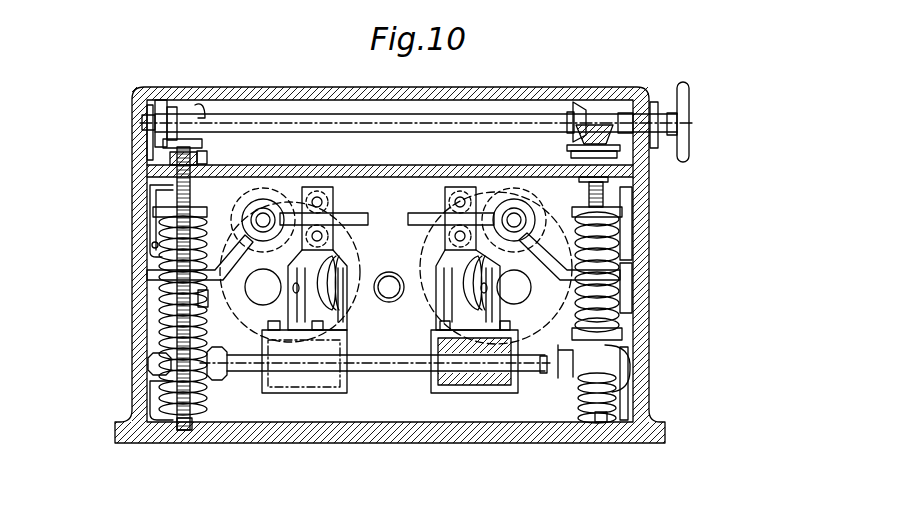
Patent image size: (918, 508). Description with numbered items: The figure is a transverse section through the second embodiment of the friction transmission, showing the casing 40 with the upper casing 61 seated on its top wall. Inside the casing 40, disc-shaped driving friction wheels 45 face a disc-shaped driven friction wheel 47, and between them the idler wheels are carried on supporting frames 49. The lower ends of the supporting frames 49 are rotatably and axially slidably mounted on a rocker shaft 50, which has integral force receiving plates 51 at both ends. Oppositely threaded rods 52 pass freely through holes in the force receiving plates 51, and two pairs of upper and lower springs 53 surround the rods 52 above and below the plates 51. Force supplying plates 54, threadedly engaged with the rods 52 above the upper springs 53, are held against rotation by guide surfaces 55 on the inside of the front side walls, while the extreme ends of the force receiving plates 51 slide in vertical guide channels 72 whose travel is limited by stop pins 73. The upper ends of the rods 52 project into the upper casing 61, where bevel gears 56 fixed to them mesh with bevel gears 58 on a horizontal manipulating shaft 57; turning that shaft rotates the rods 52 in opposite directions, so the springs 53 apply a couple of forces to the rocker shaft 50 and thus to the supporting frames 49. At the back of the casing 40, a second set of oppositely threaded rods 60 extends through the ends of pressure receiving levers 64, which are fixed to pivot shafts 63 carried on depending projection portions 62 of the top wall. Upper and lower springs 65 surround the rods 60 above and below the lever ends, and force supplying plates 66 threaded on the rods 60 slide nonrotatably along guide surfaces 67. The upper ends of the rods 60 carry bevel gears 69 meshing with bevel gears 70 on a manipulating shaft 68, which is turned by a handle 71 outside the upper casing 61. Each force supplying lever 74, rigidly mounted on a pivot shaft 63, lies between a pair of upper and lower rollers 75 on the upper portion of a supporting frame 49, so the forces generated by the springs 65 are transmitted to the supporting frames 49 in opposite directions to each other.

The casing 40 is at (322, 332).
The driving friction wheel 45 is at (278, 355).
The driven friction wheel 47 is at (398, 305).
The supporting frame 49 is at (280, 258).
The rocker shaft 50 is at (452, 365).
The force receiving plate 51 is at (185, 430).
The threaded rod 52 is at (145, 130).
The spring 53 is at (162, 374).
The force supplying plate 54 is at (150, 350).
The guide surface 55 is at (162, 302).
The bevel gear 56 is at (175, 135).
The manipulating shaft 57 is at (360, 120).
The bevel gear 58 is at (160, 112).
The threaded rod 60 is at (543, 118).
The upper casing 61 is at (652, 95).
The depending projection portion 62 is at (243, 195).
The pivot shaft 63 is at (265, 198).
The pressure receiving lever 64 is at (148, 272).
The spring 65 is at (158, 218).
The force supplying plate 66 is at (140, 165).
The guide surface 67 is at (150, 245).
The manipulating shaft 68 is at (628, 292).
The bevel gear 69 is at (604, 140).
The bevel gear 70 is at (200, 118).
The handle 71 is at (688, 105).
The vertical guide channel 72 is at (140, 412).
The stop pin 73 is at (150, 382).
The force supplying lever 74 is at (412, 166).
The roller 75 is at (285, 205).